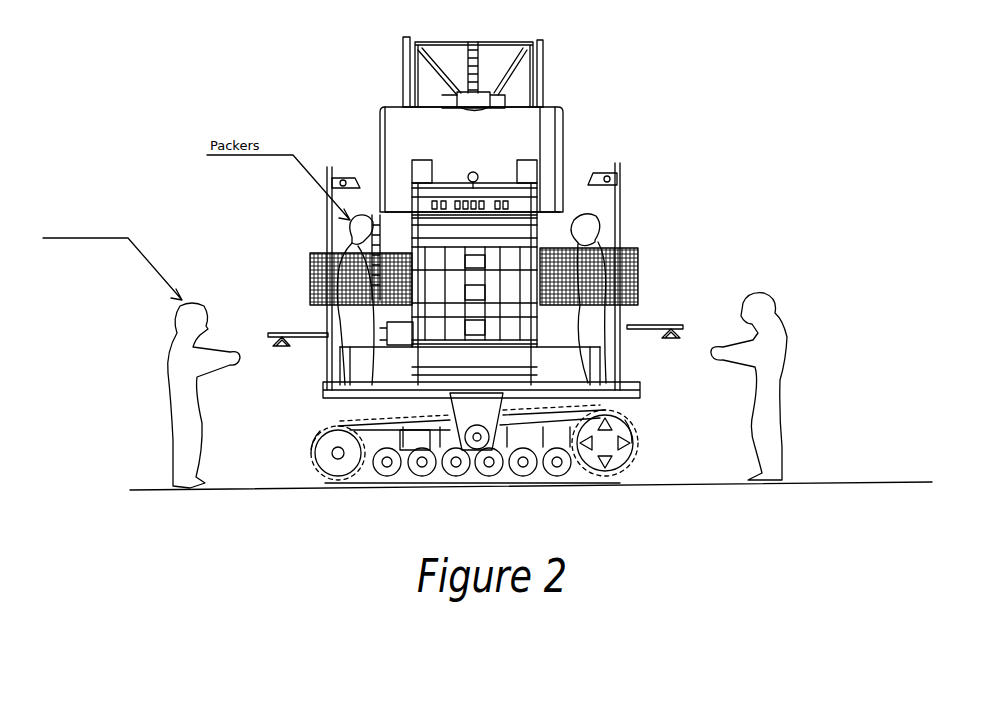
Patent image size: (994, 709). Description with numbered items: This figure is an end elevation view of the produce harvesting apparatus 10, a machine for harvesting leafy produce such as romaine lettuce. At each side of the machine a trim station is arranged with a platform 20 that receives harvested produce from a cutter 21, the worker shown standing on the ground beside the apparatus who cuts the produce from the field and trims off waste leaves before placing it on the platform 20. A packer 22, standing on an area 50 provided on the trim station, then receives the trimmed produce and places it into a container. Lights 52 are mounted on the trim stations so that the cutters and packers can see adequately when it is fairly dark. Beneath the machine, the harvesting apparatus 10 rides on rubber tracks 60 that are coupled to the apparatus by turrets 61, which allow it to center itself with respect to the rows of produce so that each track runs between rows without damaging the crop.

The produce harvesting apparatus 10 is at (603, 57).
The platform 20 is at (683, 288).
The cutter 21 is at (166, 362).
The packer 22 is at (345, 245).
The area 50 is at (326, 394).
The lights 52 is at (348, 178).
The rubber tracks 60 is at (642, 423).
The turrets 61 is at (410, 412).